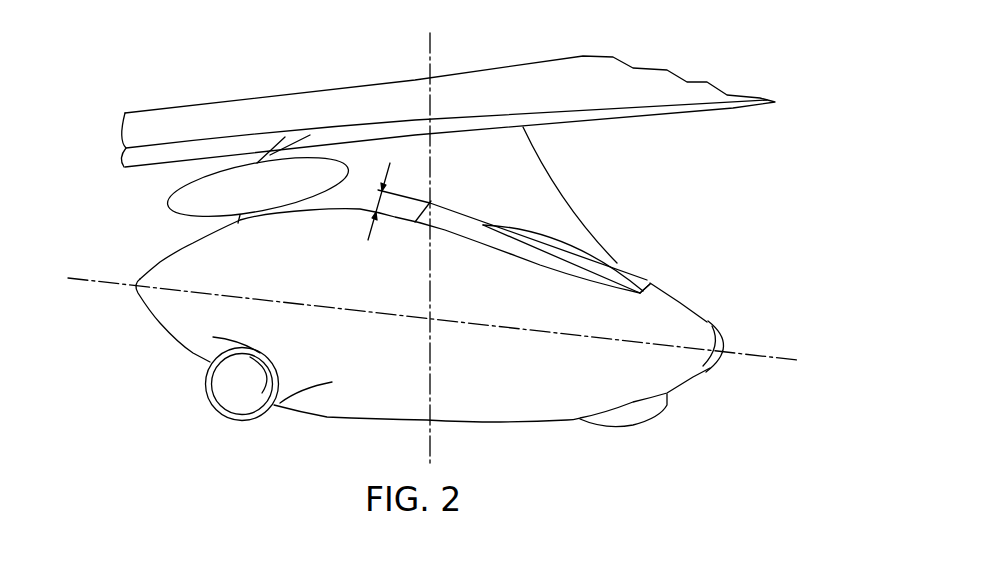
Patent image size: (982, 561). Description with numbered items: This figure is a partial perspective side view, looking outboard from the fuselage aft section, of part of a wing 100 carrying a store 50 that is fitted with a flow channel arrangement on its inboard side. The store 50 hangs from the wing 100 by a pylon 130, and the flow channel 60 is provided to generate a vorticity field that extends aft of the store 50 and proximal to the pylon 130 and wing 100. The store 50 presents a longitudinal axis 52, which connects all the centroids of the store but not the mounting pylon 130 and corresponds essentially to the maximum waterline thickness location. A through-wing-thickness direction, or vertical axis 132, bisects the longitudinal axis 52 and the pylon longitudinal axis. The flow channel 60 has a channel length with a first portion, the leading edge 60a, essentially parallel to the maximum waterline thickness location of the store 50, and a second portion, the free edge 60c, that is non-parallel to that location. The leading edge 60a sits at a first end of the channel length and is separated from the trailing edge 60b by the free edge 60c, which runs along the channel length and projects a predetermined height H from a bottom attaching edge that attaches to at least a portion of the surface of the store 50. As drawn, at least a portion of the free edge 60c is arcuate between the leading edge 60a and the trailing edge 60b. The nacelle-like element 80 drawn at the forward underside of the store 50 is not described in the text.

The wing 100 is at (552, 76).
The vertical axis 132 is at (428, 48).
The pylon 130 is at (541, 164).
The store 50 is at (507, 421).
The engine 80 is at (228, 390).
The longitudinal axis 52 is at (110, 287).
The flow channel 60 is at (620, 250).
The leading edge 60a is at (650, 283).
The trailing edge 60b is at (420, 214).
The free edge 60c is at (545, 268).
The predetermined height H is at (379, 191).